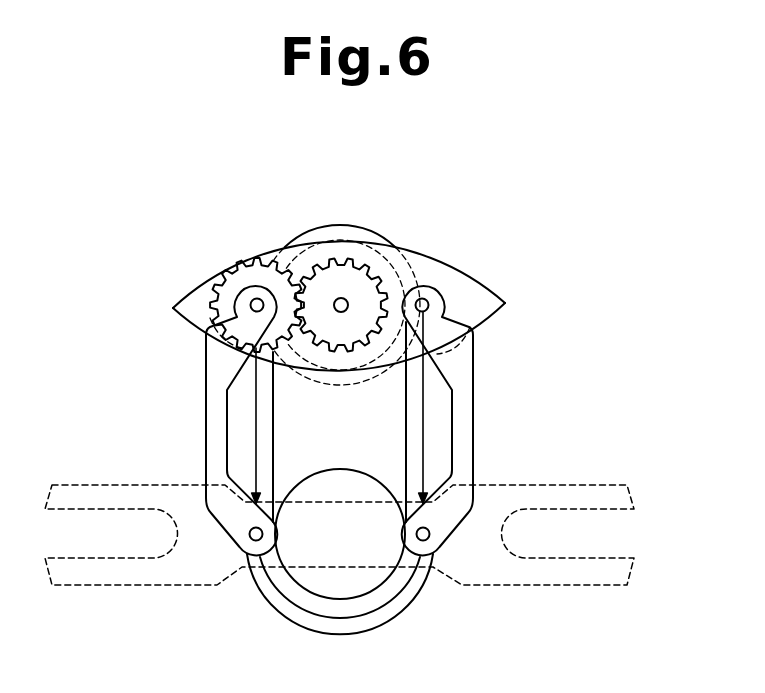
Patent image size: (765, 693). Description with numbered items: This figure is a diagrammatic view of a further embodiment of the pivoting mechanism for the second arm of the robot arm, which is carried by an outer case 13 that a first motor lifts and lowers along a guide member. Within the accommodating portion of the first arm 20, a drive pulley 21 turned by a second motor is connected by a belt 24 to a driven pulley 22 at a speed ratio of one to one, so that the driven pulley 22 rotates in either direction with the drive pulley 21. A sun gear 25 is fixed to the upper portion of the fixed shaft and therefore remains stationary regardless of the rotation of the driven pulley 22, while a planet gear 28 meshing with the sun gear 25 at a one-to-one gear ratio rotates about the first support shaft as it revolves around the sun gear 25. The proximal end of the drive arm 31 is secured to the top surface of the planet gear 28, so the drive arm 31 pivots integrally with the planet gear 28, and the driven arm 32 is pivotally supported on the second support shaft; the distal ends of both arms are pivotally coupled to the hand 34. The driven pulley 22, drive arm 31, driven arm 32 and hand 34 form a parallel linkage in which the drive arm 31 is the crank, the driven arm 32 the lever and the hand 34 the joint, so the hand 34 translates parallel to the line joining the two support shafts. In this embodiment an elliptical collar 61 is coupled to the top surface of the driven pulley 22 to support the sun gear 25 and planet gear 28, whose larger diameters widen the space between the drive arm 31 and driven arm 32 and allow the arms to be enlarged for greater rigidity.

The outer case 13 is at (402, 606).
The first arm 20 is at (424, 258).
The drive pulley 21 is at (353, 470).
The driven pulley 22 is at (373, 232).
The belt 24 is at (275, 446).
The sun gear 25 is at (320, 333).
The planet gear 28 is at (237, 262).
The drive arm 31 is at (207, 401).
The driven arm 32 is at (473, 398).
The hand 34 is at (592, 486).
The elliptical collar 61 is at (497, 296).